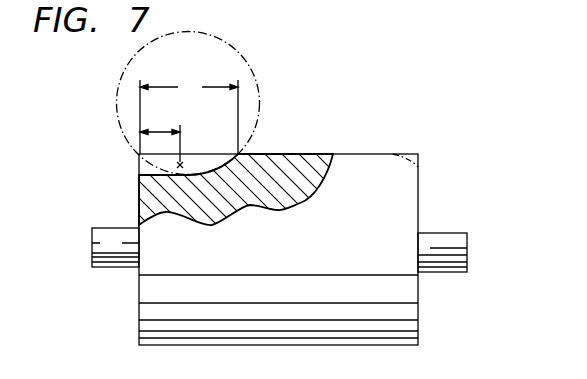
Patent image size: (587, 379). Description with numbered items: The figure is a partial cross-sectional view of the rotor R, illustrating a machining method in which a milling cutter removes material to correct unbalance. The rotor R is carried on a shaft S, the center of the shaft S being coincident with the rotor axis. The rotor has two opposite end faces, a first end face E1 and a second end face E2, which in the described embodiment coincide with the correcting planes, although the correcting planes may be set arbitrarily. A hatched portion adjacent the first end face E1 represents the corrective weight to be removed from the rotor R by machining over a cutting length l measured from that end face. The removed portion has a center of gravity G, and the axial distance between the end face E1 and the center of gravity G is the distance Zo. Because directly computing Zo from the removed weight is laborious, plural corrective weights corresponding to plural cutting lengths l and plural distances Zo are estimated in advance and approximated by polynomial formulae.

The rotor R is at (453, 148).
The end face E1 is at (139, 198).
The end face E2 is at (407, 258).
The shaft S is at (447, 233).
The machining length l is at (189, 116).
The distance between end face and center of gravity Zo is at (160, 135).
The center of gravity G is at (187, 166).